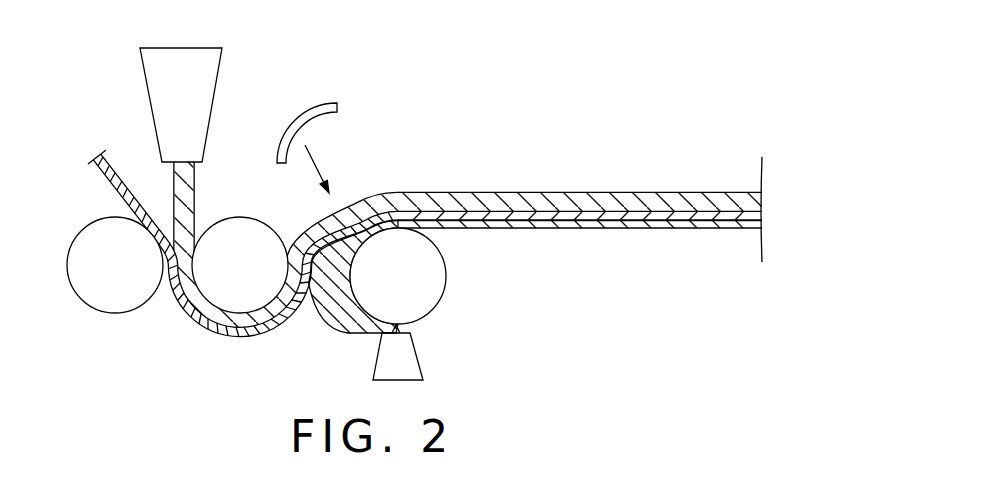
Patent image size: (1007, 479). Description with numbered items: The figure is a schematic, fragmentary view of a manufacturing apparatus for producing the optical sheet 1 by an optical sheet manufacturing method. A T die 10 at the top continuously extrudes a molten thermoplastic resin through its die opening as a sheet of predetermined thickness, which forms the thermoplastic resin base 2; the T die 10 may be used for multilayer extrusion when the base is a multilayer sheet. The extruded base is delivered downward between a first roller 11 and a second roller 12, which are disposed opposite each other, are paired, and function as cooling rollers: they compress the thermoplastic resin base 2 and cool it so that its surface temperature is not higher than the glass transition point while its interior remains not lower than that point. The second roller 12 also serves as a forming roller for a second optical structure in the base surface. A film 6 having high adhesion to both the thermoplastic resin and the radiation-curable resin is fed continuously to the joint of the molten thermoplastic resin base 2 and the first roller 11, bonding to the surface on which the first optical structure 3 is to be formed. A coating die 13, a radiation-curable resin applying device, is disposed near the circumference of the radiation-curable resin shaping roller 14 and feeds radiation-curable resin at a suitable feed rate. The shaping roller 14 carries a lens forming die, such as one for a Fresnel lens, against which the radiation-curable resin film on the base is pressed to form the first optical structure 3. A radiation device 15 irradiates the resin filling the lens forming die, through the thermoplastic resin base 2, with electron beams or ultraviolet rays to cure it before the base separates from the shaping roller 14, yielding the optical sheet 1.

The optical sheet 1 is at (713, 90).
The thermoplastic resin base 2 is at (529, 180).
The first optical structure 3 is at (592, 228).
The film 6 is at (110, 188).
The T die 10 is at (150, 89).
The first roller 11 is at (121, 300).
The second roller 12 is at (238, 227).
The coating die 13 is at (408, 353).
The radiation-curable resin shaping roller 14 is at (437, 277).
The radiation device 15 is at (301, 121).